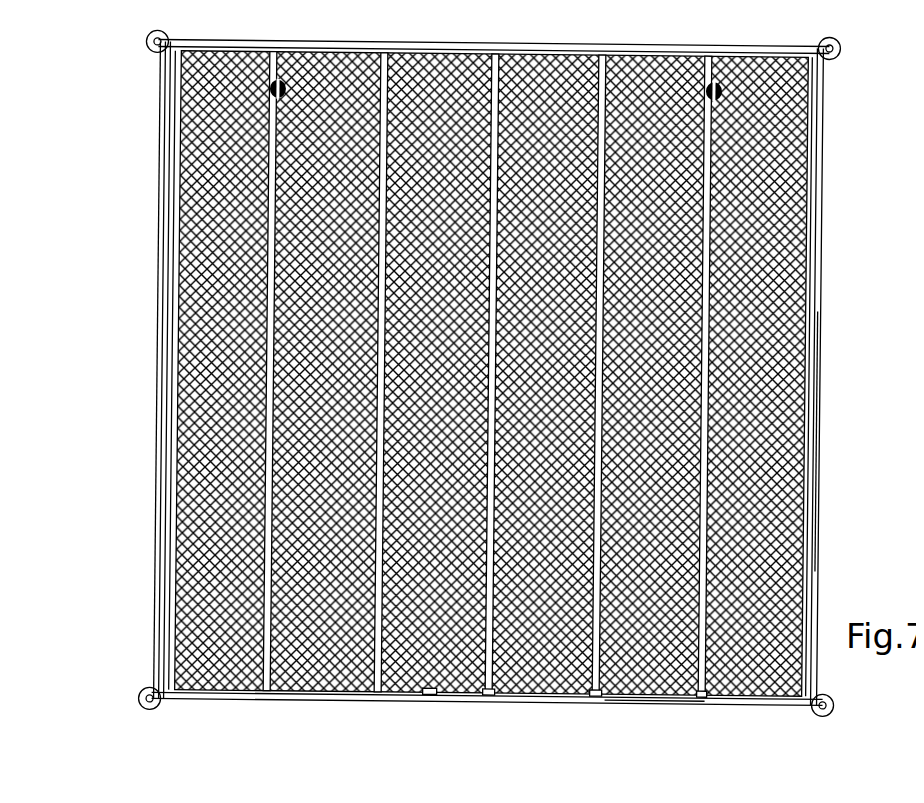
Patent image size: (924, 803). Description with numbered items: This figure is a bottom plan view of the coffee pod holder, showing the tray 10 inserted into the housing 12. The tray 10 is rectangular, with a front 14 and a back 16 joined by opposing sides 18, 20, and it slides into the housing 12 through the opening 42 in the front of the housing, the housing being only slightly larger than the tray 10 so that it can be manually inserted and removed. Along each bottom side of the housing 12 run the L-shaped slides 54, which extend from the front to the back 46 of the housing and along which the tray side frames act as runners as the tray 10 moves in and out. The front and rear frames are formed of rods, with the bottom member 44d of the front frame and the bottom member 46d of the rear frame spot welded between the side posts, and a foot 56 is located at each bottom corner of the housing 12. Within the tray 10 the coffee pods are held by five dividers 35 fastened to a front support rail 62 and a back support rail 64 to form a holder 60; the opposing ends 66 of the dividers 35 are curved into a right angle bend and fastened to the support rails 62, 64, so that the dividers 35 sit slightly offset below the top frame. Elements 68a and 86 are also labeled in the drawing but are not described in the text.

The tray 10 is at (757, 540).
The housing 12 is at (133, 352).
The front 14 is at (183, 21).
The back 16 is at (288, 702).
The side 18 is at (148, 140).
The side 20 is at (832, 160).
The dividers 35 is at (703, 307).
The opening 42 is at (810, 463).
The bottom member of front frame 44d is at (786, 36).
The back of housing 46 is at (647, 707).
The bottom member of rear frame 46d is at (709, 703).
The slides 54 is at (800, 395).
The foot 56 is at (827, 50).
The holder 60 is at (708, 207).
The front support rail 62 is at (313, 48).
The back support rail 64 is at (412, 684).
The ends of dividers 66 is at (590, 688).
The left divider strip 68a is at (265, 413).
The right divider strip 86 is at (703, 357).